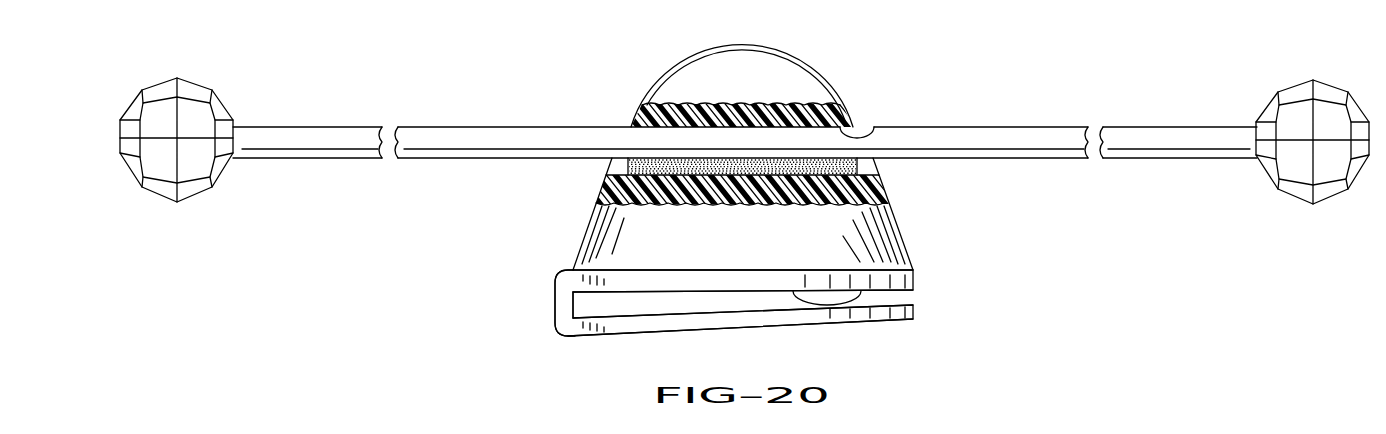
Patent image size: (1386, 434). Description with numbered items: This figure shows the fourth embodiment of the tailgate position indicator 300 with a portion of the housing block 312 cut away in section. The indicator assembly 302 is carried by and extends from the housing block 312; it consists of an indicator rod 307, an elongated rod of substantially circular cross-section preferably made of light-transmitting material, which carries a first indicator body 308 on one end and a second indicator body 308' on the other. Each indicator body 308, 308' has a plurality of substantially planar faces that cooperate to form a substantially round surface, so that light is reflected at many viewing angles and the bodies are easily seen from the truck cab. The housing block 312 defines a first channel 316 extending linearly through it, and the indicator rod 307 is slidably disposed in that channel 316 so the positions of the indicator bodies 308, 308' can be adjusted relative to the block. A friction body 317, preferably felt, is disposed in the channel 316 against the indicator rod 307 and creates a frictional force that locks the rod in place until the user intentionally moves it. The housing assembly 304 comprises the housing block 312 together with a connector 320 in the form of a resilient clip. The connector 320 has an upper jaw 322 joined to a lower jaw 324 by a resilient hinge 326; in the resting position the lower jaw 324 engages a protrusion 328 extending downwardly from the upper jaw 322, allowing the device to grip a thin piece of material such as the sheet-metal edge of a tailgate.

The tailgate position indicator 300 is at (843, 72).
The indicator assembly 302 is at (345, 125).
The housing assembly 304 is at (578, 240).
The indicator rod 307 is at (478, 127).
The first indicator body 308 is at (206, 118).
The second indicator body 308' is at (1283, 119).
The housing block 312 is at (887, 243).
The first channel 316 is at (866, 127).
The friction body 317 is at (634, 162).
The connector 320 is at (627, 337).
The upper jaw 322 is at (907, 282).
The lower jaw 324 is at (907, 315).
The resilient hinge 326 is at (560, 302).
The protrusion 328 is at (838, 302).